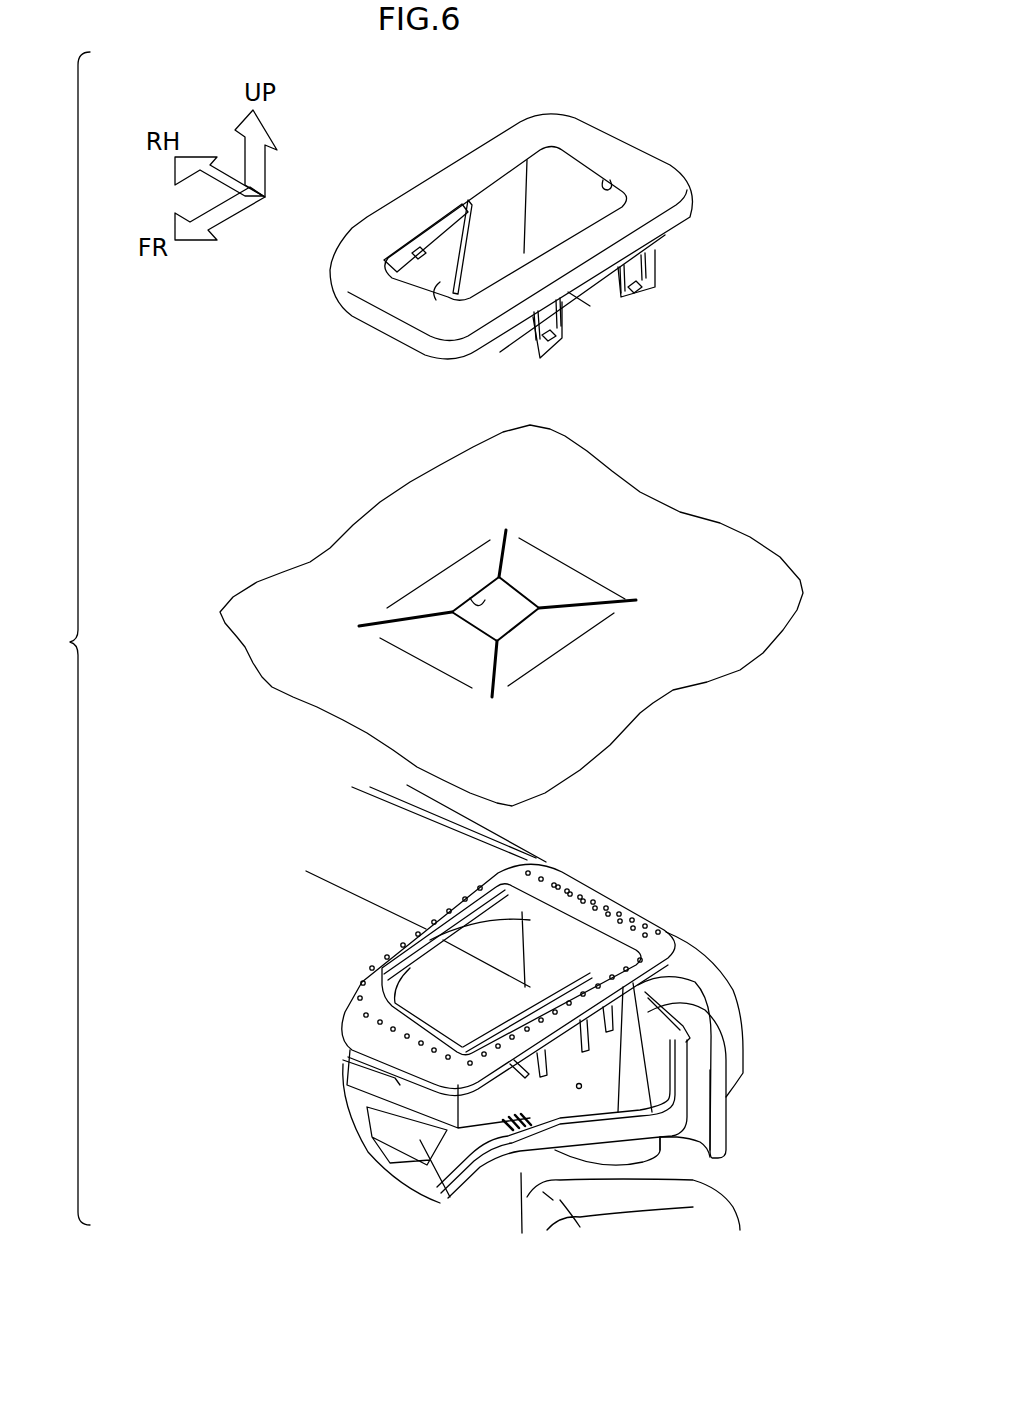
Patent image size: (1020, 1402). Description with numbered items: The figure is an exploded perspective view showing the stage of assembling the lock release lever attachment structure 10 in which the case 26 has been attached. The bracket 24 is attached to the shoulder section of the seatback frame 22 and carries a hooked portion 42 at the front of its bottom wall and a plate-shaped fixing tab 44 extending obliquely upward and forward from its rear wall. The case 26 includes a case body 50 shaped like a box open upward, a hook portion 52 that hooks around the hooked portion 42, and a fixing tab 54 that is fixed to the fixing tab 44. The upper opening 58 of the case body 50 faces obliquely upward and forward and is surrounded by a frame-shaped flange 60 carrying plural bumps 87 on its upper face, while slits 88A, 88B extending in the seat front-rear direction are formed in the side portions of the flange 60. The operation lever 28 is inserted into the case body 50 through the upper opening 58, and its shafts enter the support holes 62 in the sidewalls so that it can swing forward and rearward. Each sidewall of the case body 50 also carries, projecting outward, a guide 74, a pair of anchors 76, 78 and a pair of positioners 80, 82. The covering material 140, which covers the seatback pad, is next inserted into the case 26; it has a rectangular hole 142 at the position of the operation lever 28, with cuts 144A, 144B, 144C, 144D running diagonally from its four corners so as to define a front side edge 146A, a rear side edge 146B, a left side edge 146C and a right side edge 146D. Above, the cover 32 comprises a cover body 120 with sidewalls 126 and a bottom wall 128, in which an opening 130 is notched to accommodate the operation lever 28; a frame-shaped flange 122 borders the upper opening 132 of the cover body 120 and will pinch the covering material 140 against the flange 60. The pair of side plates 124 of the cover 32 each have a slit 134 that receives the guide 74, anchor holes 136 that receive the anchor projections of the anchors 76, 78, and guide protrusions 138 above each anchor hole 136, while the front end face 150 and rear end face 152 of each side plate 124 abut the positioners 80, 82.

The lock release lever attachment structure 10 is at (237, 468).
The seatback frame 22 is at (335, 870).
The bracket 24 is at (488, 1177).
The case 26 is at (581, 866).
The operation lever 28 is at (438, 973).
The cover 32 is at (565, 104).
The hooked portion 42 is at (372, 1150).
The fixing tab 44 is at (658, 1012).
The case body 50 is at (386, 1084).
The hook portion 52 is at (393, 1161).
The fixing tab 54 is at (650, 985).
The upper opening 58 is at (370, 978).
The flange 60 is at (650, 915).
The support holes 62 is at (581, 1088).
The guide 74 is at (602, 1052).
The anchor 76 is at (530, 1100).
The anchor 78 is at (612, 1040).
The positioner 80 is at (517, 1070).
The positioner 82 is at (650, 1018).
The bumps 87 is at (610, 905).
The slit 88A is at (566, 1000).
The slit 88B is at (462, 912).
The cover body 120 is at (592, 162).
The flange 122 is at (383, 335).
The side plates 124 is at (455, 225).
The sidewalls 126 is at (490, 180).
The bottom wall 128 is at (505, 270).
The opening 130 is at (440, 282).
The upper opening 132 is at (607, 180).
The slits 134 is at (600, 313).
The anchor holes 136 is at (418, 250).
The guide protrusions 138 is at (522, 320).
The covering material 140 is at (727, 514).
The rectangular hole 142 is at (478, 600).
The cut 144A is at (486, 690).
The cut 144B is at (383, 615).
The cut 144C is at (496, 548).
The cut 144D is at (600, 598).
The front side edge 146A is at (447, 647).
The rear side edge 146B is at (546, 575).
The left side edge 146C is at (535, 650).
The right side edge 146D is at (440, 592).
The front end face 150 is at (527, 358).
The rear end face 152 is at (655, 279).